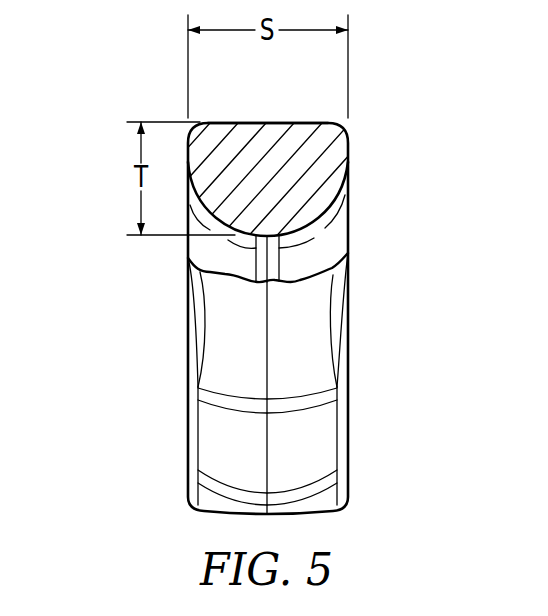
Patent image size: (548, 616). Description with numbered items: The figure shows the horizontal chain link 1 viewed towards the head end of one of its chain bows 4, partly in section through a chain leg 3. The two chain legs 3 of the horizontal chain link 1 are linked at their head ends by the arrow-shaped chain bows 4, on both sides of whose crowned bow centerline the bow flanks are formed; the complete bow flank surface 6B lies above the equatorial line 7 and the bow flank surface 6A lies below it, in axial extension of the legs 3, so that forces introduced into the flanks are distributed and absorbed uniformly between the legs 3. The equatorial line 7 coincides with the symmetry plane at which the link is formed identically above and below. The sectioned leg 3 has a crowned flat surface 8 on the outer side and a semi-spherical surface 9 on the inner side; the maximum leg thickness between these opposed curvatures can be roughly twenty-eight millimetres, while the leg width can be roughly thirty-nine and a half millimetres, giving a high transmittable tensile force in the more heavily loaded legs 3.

The horizontal chain link 1 is at (75, 317).
The chain leg 3 is at (241, 150).
The chain bow 4 is at (308, 342).
The bow flank surface below the equatorial line 6A is at (317, 448).
The bow flank surface above the equatorial line 6B is at (218, 449).
The equatorial line 7 is at (267, 365).
The crowned flat surface 8 is at (275, 123).
The semi-spherical surface 9 is at (333, 233).